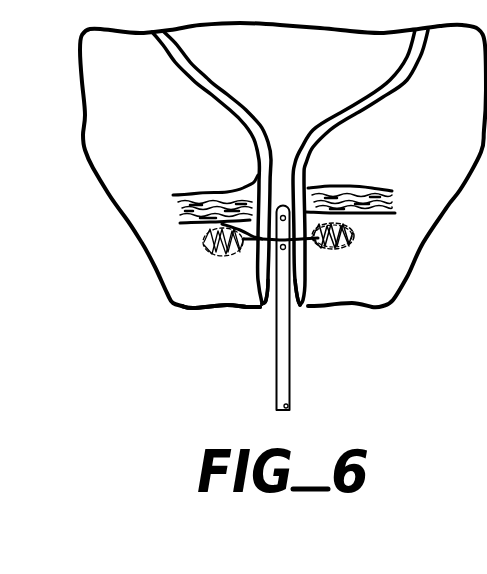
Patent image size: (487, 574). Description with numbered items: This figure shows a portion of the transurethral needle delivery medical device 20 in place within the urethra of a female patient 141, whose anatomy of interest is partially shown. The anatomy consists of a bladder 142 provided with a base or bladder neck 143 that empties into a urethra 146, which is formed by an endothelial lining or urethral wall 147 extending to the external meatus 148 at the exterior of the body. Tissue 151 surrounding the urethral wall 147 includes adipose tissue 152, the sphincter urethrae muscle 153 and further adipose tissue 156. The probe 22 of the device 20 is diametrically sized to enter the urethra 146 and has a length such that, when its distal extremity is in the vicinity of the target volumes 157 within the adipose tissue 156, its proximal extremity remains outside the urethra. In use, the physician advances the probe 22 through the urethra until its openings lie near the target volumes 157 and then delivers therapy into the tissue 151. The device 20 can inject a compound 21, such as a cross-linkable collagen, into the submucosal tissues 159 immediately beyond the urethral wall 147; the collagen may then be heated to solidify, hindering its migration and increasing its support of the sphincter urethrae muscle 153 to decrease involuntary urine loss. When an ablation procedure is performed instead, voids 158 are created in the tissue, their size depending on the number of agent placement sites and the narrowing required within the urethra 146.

The female patient 141 is at (459, 107).
The bladder 142 is at (195, 72).
The bladder neck 143 is at (271, 165).
The urethra 146 is at (258, 173).
The urethral wall 147 is at (309, 180).
The tissue 151 is at (177, 213).
The adipose tissue 152 is at (237, 150).
The sphincter urethrae muscle 153 is at (203, 227).
The adipose tissue 156 is at (250, 263).
The target volumes 157 is at (335, 250).
The voids 158 is at (355, 240).
The submucosal tissues 159 is at (267, 282).
The external meatus 148 is at (297, 306).
The compound 21 is at (348, 247).
The transurethral needle delivery medical device 20 is at (295, 351).
The probe 22 is at (277, 378).